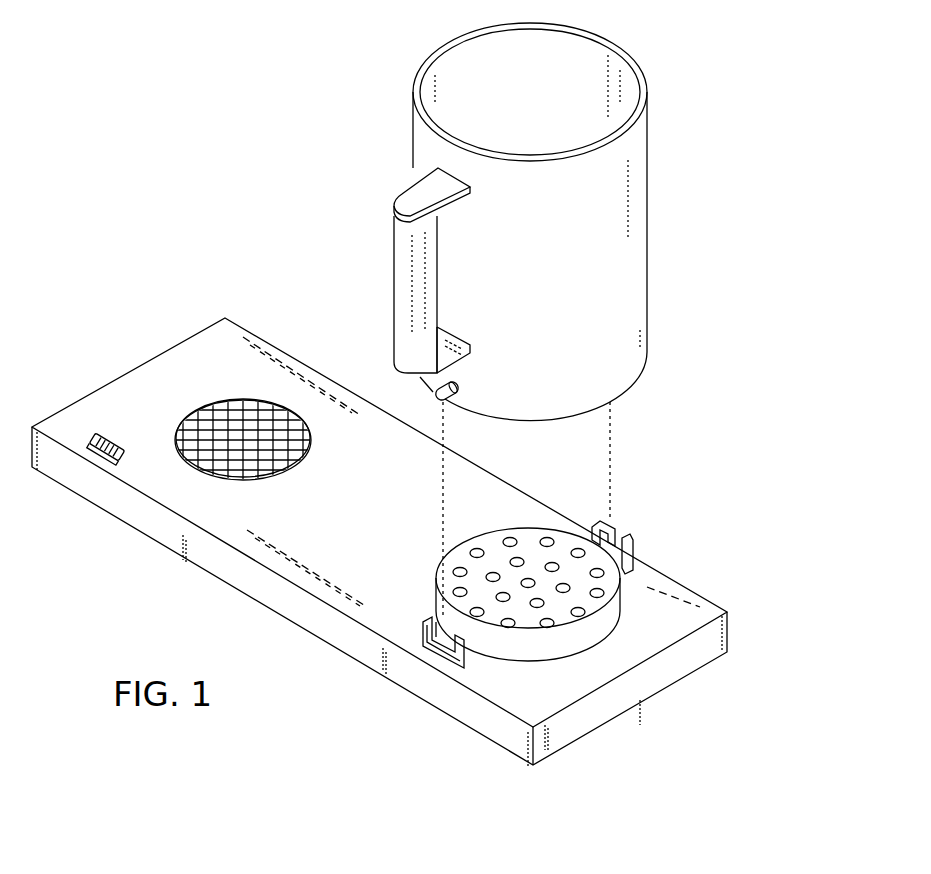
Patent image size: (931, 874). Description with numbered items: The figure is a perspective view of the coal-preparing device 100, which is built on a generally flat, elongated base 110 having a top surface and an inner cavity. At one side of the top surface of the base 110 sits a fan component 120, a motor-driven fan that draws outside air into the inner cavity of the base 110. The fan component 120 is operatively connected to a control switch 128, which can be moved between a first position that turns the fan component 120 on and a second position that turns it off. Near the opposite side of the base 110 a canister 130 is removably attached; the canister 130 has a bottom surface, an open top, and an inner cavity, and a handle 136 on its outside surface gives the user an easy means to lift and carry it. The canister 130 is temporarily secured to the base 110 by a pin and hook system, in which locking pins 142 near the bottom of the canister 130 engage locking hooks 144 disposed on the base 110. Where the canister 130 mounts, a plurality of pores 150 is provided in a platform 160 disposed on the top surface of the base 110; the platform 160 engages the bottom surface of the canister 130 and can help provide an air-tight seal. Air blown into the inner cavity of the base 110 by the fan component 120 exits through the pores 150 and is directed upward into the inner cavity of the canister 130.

The coal-preparing device 100 is at (753, 227).
The base 110 is at (391, 521).
The fan component 120 is at (233, 400).
The control switch 128 is at (100, 428).
The canister 130 is at (551, 291).
The handle 136 is at (408, 248).
The locking pins 142 is at (440, 396).
The locking hooks 144 is at (627, 543).
The pores 150 is at (577, 612).
The platform 160 is at (535, 668).